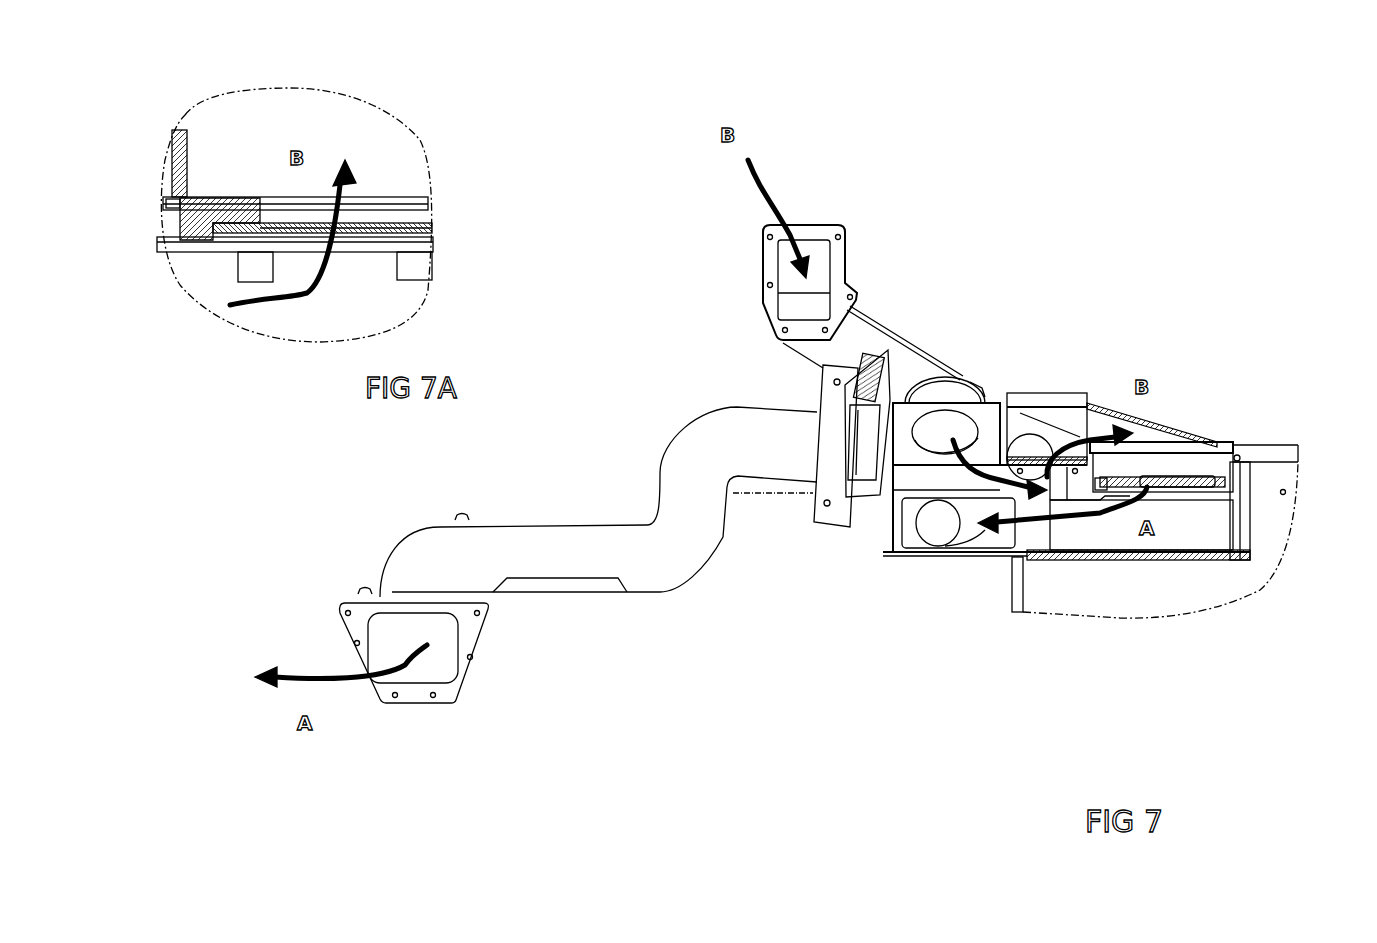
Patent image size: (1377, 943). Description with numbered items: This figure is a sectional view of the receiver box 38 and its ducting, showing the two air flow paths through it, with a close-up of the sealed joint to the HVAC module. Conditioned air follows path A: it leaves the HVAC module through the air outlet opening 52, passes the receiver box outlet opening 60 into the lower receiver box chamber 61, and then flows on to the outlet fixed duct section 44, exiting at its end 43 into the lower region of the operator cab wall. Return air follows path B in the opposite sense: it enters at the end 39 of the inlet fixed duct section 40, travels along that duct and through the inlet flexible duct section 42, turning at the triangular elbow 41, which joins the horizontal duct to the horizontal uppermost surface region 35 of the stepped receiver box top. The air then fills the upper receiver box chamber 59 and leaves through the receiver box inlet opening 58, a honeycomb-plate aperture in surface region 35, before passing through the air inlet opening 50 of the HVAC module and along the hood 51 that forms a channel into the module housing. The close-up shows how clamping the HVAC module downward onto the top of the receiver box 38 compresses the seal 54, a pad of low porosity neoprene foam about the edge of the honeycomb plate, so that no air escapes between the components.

In FIG. 7A, the upper surface region 35 is at (400, 223).
In FIG. 7, the receiver box 38 is at (880, 560).
In FIG. 7, the end of the inlet fixed duct section 39 is at (822, 235).
In FIG. 7, the inlet fixed duct section 40 is at (853, 335).
In FIG. 7, the elbow 41 is at (990, 407).
In FIG. 7, the inlet flexible duct section 42 is at (962, 380).
In FIG. 7, the end of the outlet fixed duct section 43 is at (410, 610).
In FIG. 7, the outlet fixed duct section 44 is at (697, 475).
In FIG. 7A, the air inlet opening 50 is at (373, 198).
In FIG. 7, the air inlet opening 50 is at (1080, 420).
In FIG. 7, the hood 51 is at (1153, 437).
In FIG. 7, the air outlet opening 52 is at (1225, 477).
In FIG. 7A, the seal 54 is at (200, 223).
In FIG. 7A, the receiver box inlet opening 58 is at (370, 247).
In FIG. 7, the receiver box inlet opening 58 is at (1067, 500).
In FIG. 7, the upper receiver box chamber 59 is at (1050, 500).
In FIG. 7, the receiver box outlet opening 60 is at (1195, 505).
In FIG. 7, the lower receiver box chamber 61 is at (1127, 540).